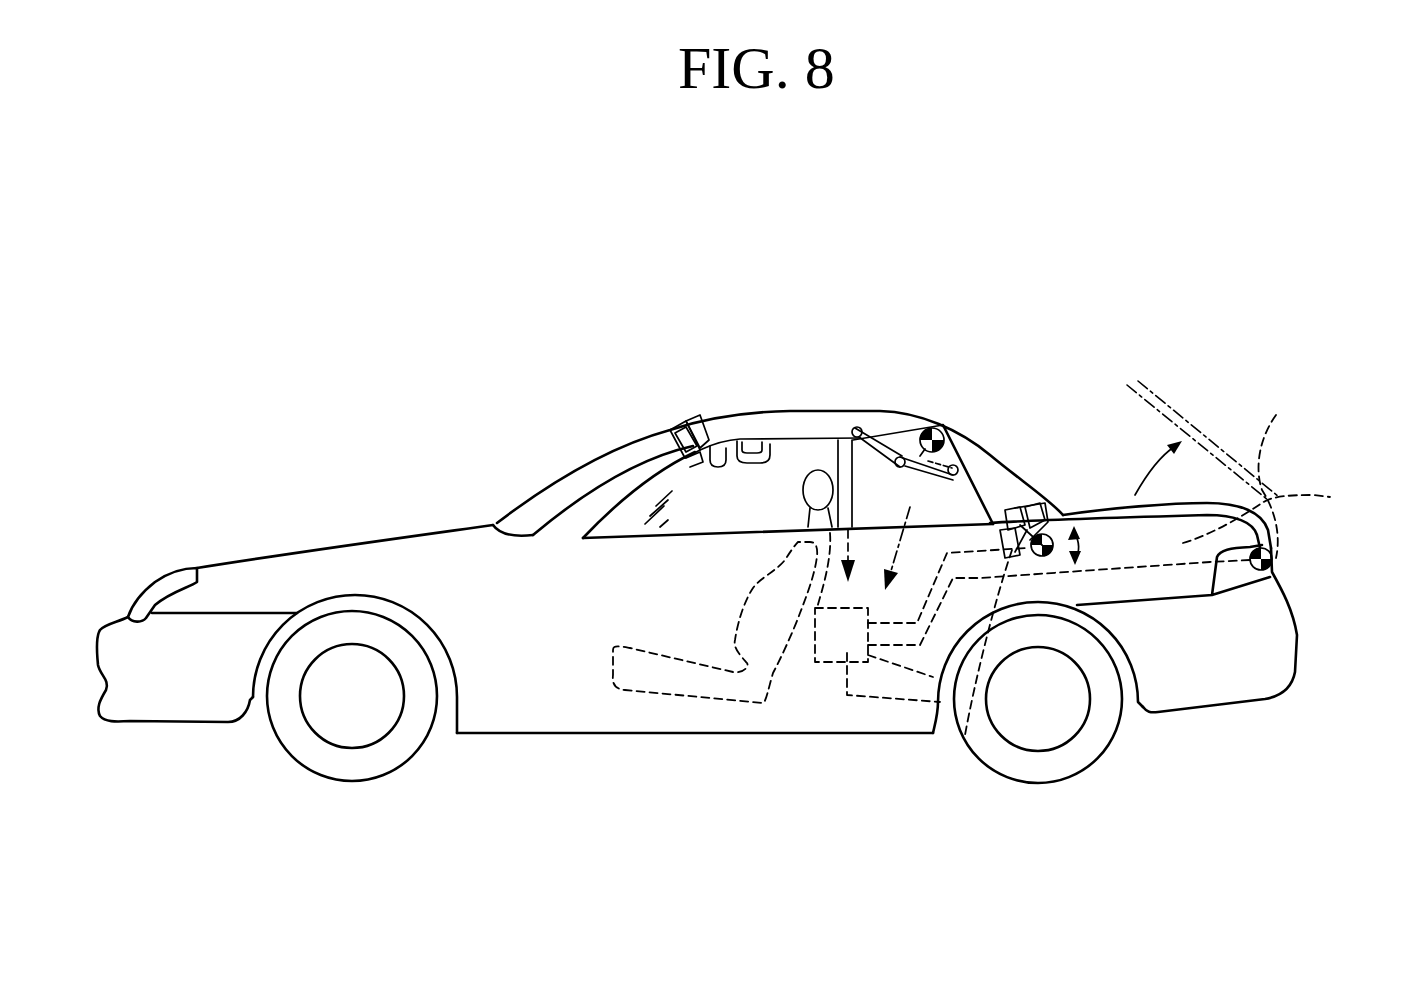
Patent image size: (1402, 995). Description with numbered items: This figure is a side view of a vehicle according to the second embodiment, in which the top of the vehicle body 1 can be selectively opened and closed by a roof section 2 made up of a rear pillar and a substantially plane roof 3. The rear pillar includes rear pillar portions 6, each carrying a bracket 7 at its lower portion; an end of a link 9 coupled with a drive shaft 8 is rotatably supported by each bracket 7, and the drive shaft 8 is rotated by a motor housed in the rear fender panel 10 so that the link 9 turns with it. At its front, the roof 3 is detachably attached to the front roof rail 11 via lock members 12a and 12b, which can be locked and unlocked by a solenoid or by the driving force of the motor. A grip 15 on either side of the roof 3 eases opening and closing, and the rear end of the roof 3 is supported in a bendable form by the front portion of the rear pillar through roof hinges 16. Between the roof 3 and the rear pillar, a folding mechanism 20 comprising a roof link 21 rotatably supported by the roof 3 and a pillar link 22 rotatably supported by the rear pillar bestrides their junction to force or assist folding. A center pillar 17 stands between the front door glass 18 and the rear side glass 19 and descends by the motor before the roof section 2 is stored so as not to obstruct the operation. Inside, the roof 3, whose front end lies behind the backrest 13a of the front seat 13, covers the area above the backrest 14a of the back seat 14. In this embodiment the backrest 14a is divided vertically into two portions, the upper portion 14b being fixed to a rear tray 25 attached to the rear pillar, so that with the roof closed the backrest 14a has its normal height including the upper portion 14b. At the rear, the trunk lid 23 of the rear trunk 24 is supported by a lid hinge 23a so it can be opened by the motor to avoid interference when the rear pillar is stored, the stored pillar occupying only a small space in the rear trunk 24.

The vehicle body 1 is at (450, 504).
The roof section 2 is at (777, 413).
The roof 3 is at (800, 412).
The rear pillar portions 6 is at (1010, 497).
The bracket 7 is at (1005, 517).
The drive shaft 8 is at (1070, 513).
The link 9 is at (1058, 510).
The rear fender panel 10 is at (1133, 587).
The front roof rail 11 is at (665, 428).
The lock member 12a is at (652, 443).
The lock member 12b is at (707, 428).
The front seat 13 is at (703, 700).
The backrest of front seat 13a is at (778, 622).
The back seat 14 is at (885, 703).
The backrest of back seat 14a is at (990, 580).
The upper portion of backrest 14b is at (1027, 557).
The grip 15 is at (762, 440).
The roof hinges 16 is at (935, 428).
The center pillar 17 is at (833, 425).
The front door glass 18 is at (627, 518).
The rear side glass 19 is at (953, 515).
The folding mechanism 20 is at (902, 352).
The roof link 21 is at (860, 430).
The pillar link 22 is at (900, 455).
The trunk lid 23 is at (1207, 502).
The lid hinge 23a is at (1275, 568).
The rear trunk 24 is at (1181, 516).
The rear tray 25 is at (1030, 513).